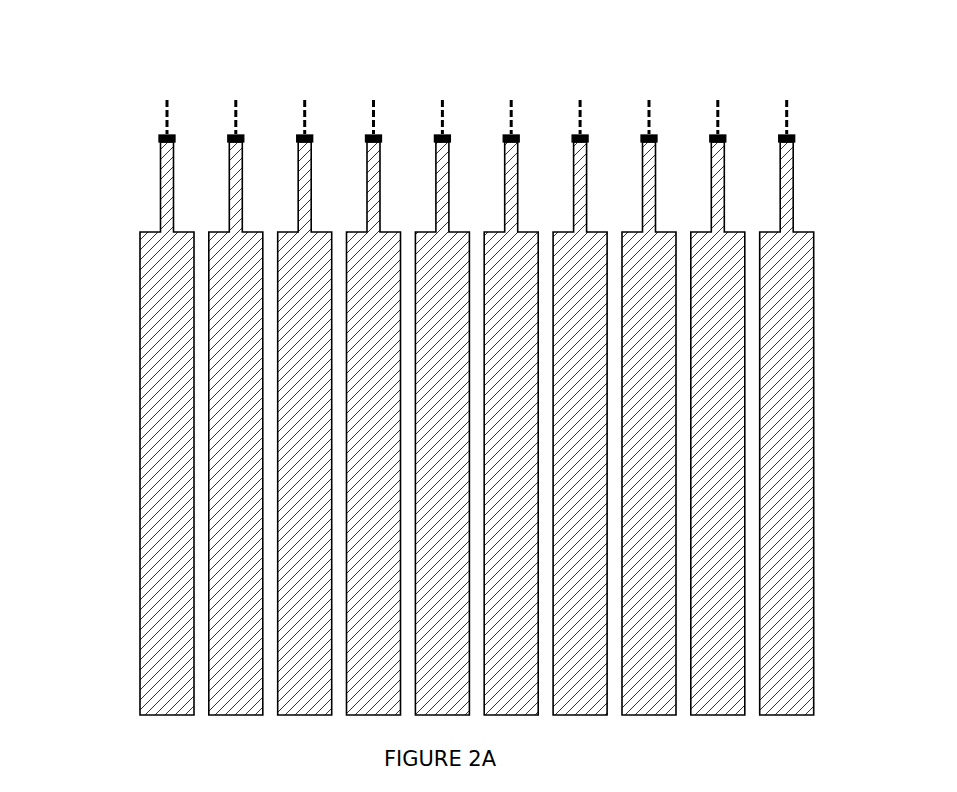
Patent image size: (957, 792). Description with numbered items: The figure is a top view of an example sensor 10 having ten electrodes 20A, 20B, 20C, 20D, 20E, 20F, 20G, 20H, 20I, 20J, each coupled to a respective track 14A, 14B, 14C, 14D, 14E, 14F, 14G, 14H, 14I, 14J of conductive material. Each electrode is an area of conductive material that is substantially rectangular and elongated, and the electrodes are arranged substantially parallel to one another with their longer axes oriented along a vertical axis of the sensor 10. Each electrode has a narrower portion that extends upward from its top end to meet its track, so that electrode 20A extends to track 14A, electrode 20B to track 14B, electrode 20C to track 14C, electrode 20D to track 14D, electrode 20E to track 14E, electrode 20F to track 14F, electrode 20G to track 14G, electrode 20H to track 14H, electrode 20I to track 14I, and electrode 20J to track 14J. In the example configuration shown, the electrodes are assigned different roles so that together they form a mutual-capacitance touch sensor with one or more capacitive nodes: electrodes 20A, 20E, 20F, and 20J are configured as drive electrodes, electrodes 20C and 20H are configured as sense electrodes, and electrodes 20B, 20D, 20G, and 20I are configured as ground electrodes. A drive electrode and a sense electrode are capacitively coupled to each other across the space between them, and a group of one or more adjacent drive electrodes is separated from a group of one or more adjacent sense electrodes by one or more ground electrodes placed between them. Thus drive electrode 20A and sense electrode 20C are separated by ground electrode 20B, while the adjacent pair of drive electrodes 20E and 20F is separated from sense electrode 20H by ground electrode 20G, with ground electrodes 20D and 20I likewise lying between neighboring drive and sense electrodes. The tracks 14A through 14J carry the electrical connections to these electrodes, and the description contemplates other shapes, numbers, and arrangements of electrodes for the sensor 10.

The sensor 10 is at (75, 380).
The track 14A is at (166, 84).
The track 14B is at (235, 84).
The track 14C is at (304, 84).
The track 14D is at (372, 84).
The track 14E is at (441, 84).
The track 14F is at (510, 84).
The track 14G is at (579, 84).
The track 14H is at (648, 84).
The track 14I is at (717, 84).
The track 14J is at (786, 84).
The electrode 20A is at (151, 494).
The electrode 20B is at (252, 494).
The electrode 20C is at (321, 494).
The electrode 20D is at (390, 494).
The electrode 20E is at (426, 494).
The electrode 20F is at (495, 494).
The electrode 20G is at (564, 494).
The electrode 20H is at (633, 494).
The electrode 20I is at (734, 494).
The electrode 20J is at (803, 494).